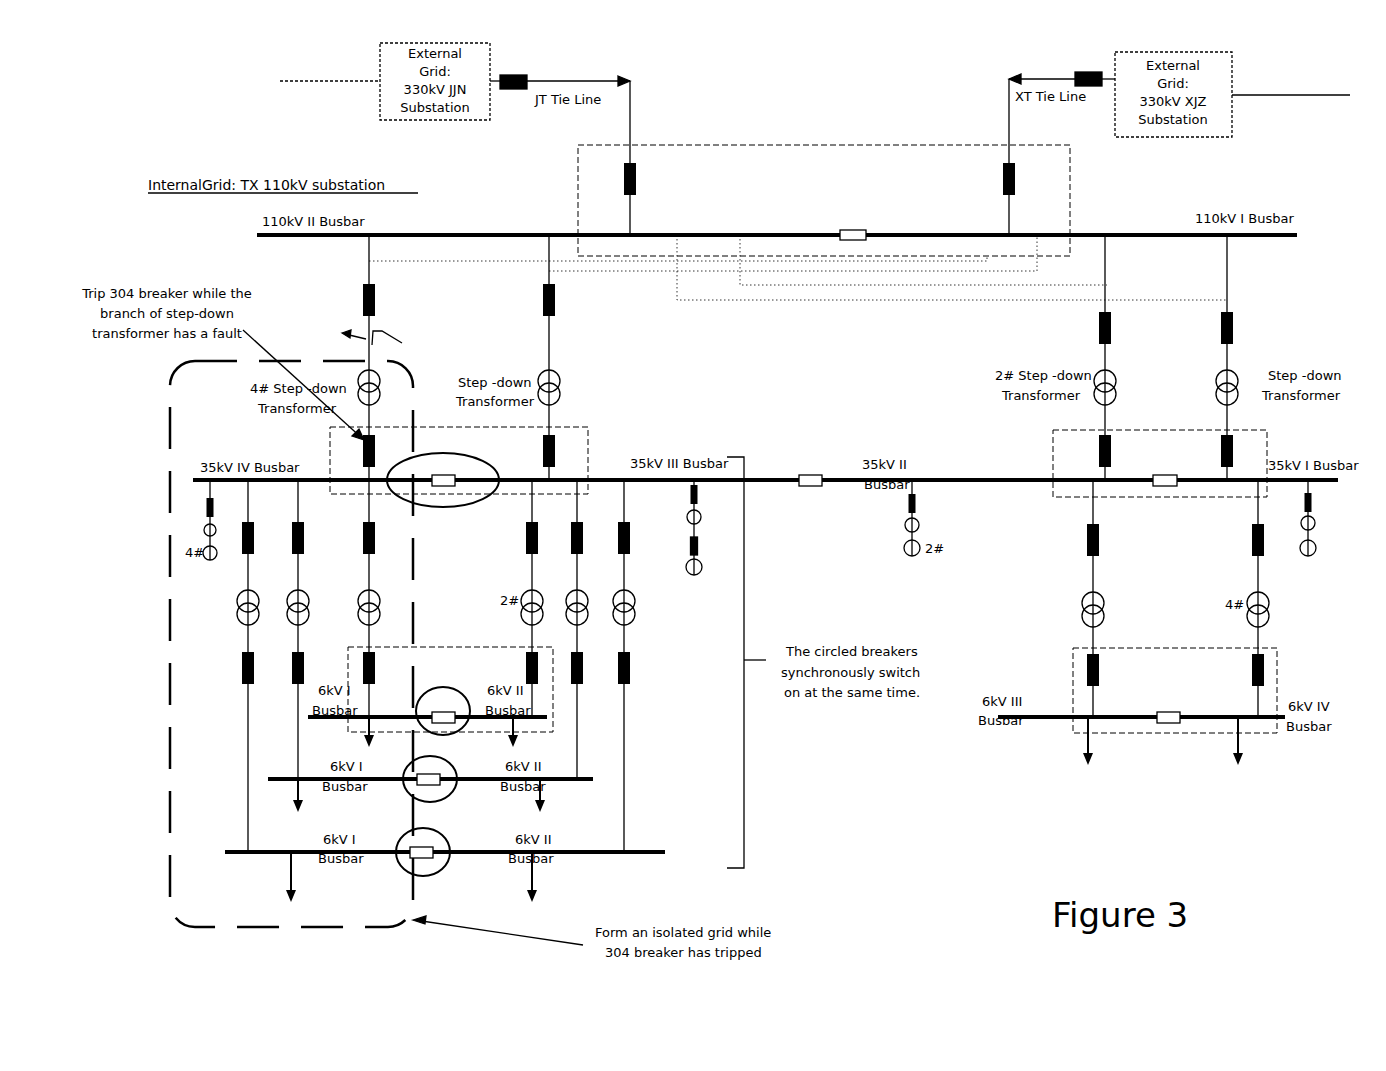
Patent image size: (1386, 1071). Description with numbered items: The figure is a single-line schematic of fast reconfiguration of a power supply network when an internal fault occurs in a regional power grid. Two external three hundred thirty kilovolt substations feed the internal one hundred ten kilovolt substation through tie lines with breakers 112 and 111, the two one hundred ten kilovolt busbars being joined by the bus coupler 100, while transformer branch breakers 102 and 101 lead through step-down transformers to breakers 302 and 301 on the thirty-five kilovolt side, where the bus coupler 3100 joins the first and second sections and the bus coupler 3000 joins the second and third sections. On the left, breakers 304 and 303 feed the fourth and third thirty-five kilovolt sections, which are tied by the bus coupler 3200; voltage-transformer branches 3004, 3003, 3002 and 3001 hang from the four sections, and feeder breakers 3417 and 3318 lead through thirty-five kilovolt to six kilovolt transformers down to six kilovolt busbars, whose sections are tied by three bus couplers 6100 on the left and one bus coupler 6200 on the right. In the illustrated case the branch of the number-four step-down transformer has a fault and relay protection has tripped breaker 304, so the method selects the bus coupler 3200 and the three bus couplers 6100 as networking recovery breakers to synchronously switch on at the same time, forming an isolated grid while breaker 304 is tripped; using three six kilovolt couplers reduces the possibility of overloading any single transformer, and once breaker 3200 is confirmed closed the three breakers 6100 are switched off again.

The bus coupler breaker of 110 kV 100 is at (853, 227).
The 110kV I busbar transformer breaker 101 is at (1211, 328).
The 110kV I busbar 2# transformer breaker 102 is at (1086, 328).
The XT tie line breaker 111 is at (991, 179).
The breaker 112 is at (616, 179).
The 35kV I busbar transformer breaker 301 is at (1241, 451).
The 35kV I busbar 2# transformer breaker 302 is at (1086, 451).
The 35kV III busbar transformer breaker 303 is at (533, 451).
The breaker 304 is at (354, 451).
The bus coupler of 35 kV 3000 is at (811, 472).
The 35kV I busbar voltage transformer breaker 3001 is at (1323, 518).
The 35kV II busbar voltage transformer breaker 3002 is at (927, 518).
The 35kV III busbar voltage transformer breaker 3003 is at (680, 527).
The 35kV IV busbar voltage transformer breaker 3004 is at (194, 520).
The 35kV I/II bus tie breaker 3100 is at (1169, 471).
The bus coupler of 35 kV 3200 is at (443, 479).
The 35kV III busbar feeder breaker 3318 is at (514, 538).
The 35kV IV busbar feeder breaker 3417 is at (387, 538).
The bus coupler of 6 kV 6100 is at (433, 781).
The 6kV III/IV bus tie breaker 6200 is at (1166, 709).